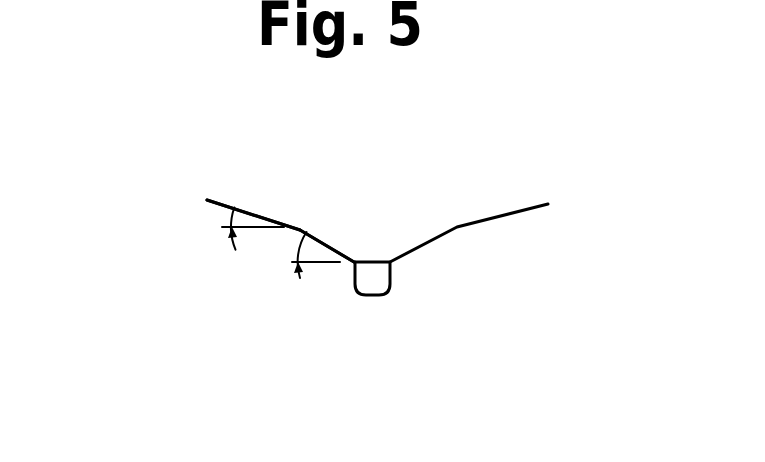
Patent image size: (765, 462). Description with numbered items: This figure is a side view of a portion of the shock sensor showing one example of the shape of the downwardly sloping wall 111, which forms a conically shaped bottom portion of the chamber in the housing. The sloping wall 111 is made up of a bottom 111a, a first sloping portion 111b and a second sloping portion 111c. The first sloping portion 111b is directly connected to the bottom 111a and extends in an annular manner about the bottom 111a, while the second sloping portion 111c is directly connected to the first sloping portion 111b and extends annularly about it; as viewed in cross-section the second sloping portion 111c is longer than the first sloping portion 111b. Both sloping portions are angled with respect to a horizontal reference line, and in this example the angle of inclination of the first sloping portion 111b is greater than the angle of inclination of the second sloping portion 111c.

The sloping wall 111 is at (446, 229).
The bottom 111a is at (372, 268).
The first sloping portion 111b is at (330, 241).
The second sloping portion 111c is at (254, 216).